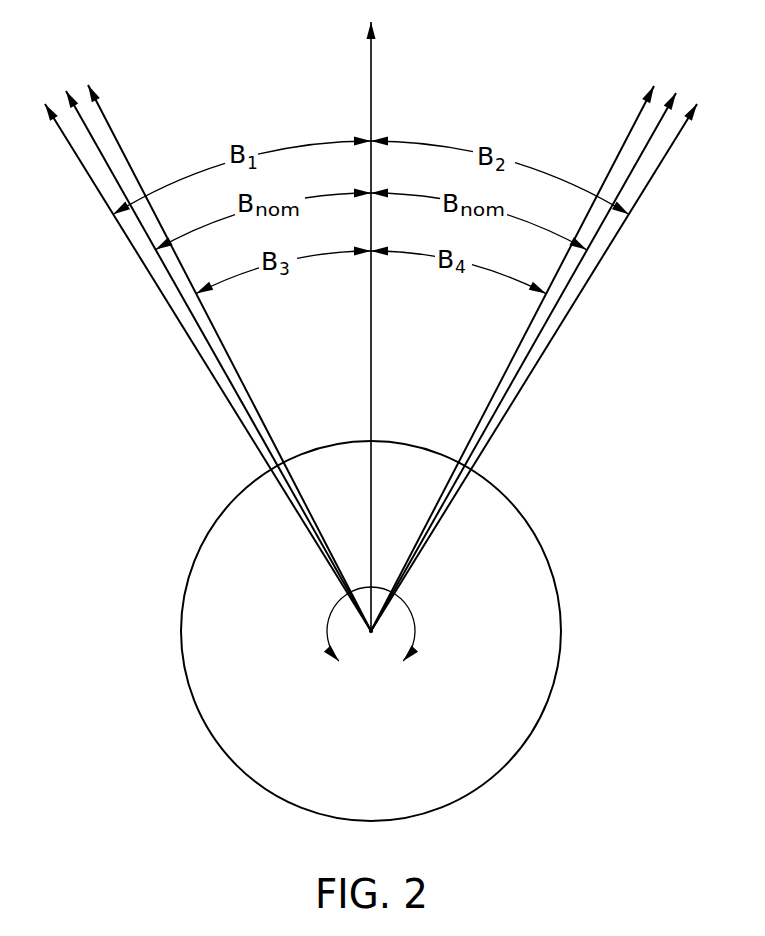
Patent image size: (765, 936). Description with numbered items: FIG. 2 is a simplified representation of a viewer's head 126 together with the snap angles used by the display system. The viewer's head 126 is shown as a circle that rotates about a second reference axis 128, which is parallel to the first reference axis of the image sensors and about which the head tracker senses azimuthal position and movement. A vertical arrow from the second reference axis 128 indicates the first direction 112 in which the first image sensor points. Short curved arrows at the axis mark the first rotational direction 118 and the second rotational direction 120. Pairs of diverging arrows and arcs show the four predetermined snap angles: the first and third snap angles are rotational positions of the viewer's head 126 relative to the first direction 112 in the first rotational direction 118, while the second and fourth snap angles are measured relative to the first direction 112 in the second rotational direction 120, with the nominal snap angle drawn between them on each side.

The first direction 112 is at (371, 83).
The first rotational direction 118 is at (327, 632).
The second rotational direction 120 is at (415, 632).
The viewer's head 126 is at (561, 603).
The second reference axis 128 is at (371, 632).